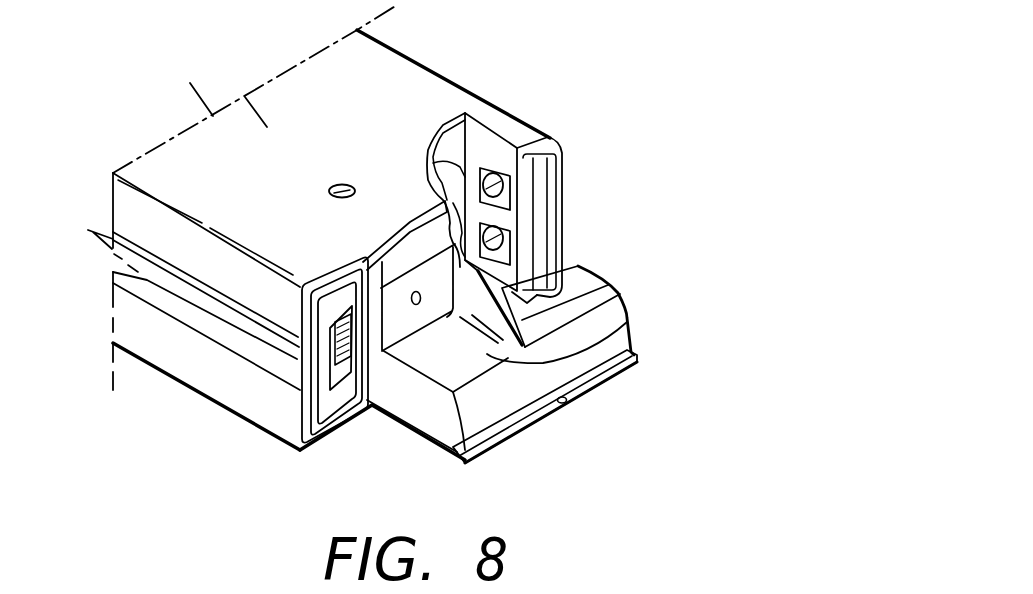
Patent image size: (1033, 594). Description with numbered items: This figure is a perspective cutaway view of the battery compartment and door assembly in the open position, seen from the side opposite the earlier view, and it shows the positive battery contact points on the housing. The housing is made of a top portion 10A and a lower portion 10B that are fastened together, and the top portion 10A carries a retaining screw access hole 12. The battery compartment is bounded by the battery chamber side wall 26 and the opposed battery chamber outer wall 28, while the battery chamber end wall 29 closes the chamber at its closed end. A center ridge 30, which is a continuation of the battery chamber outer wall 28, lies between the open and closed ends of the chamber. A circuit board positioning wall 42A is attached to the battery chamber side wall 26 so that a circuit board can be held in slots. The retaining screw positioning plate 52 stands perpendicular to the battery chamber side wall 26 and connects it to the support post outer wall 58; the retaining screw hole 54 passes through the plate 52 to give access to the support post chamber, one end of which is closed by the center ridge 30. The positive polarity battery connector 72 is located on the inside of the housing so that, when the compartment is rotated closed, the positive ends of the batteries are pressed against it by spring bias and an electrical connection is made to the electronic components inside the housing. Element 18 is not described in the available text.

The top portion 10A is at (444, 98).
The lower portion 10B is at (205, 382).
The retaining screw access hole 12 is at (337, 187).
The shield plate 18 is at (605, 374).
The battery chamber side wall 26 is at (577, 352).
The battery chamber outer wall 28 is at (521, 392).
The battery chamber end wall 29 is at (457, 435).
The center ridge 30 is at (482, 343).
The circuit board positioning wall 42A is at (578, 278).
The retaining screw positioning plate 52 is at (399, 291).
The retaining screw hole 54 is at (417, 245).
The support post outer wall 58 is at (416, 292).
The positive polarity battery connector 72 is at (495, 245).